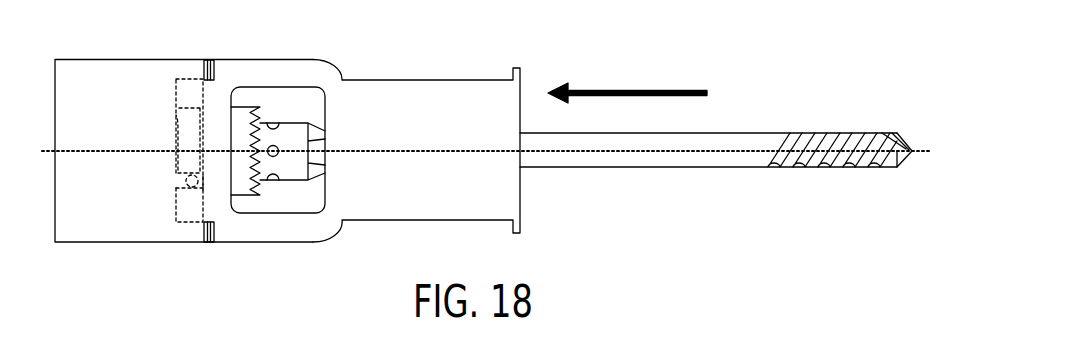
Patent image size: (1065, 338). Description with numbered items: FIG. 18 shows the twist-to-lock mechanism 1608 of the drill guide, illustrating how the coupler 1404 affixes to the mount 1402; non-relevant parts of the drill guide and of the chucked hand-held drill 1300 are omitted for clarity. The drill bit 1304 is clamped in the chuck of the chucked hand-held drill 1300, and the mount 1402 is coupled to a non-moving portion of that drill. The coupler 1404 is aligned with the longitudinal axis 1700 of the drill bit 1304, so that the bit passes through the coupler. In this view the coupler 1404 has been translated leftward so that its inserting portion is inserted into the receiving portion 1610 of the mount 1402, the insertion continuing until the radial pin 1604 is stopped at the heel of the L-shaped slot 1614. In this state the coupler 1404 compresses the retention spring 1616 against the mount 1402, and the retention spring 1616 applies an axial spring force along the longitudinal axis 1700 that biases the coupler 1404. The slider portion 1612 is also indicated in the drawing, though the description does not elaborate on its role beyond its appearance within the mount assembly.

The chucked hand-held drill 1300 is at (482, 152).
The drill bit 1304 is at (740, 133).
The mount 1402 is at (108, 243).
The coupler 1404 is at (407, 80).
The radial pin 1604 is at (185, 182).
The twist-to-lock mechanism 1608 is at (226, 82).
The receiving portion 1610 is at (190, 59).
The slider lower portion 1612 is at (184, 222).
The L-shaped slot 1614 is at (207, 185).
The retention spring 1616 is at (206, 60).
The longitudinal axis 1700 is at (918, 152).